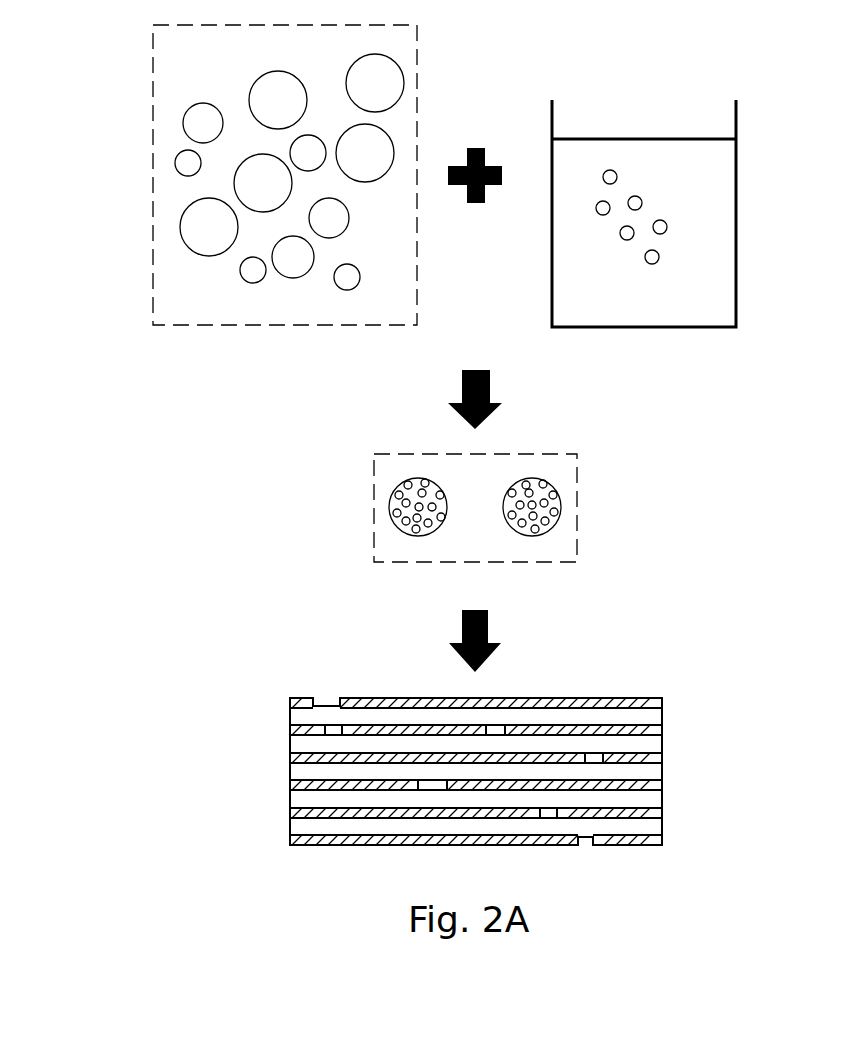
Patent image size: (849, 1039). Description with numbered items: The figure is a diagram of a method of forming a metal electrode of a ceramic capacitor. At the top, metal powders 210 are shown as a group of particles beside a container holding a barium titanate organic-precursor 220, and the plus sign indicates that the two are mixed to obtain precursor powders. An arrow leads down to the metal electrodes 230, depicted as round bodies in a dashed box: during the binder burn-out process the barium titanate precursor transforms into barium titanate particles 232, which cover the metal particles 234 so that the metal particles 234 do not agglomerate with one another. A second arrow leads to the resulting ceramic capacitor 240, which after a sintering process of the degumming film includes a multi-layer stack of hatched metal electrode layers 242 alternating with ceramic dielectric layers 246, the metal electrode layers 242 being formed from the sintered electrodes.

The metal powders 210 is at (153, 60).
The barium titanate organic-precursor 220 is at (638, 132).
The metal electrodes 230 is at (522, 475).
The barium titanate particles 232 is at (560, 513).
The metal particles 234 is at (532, 478).
The ceramic capacitor 240 is at (285, 689).
The metal electrode layers 242 is at (290, 758).
The ceramic dielectric layers 246 is at (662, 745).